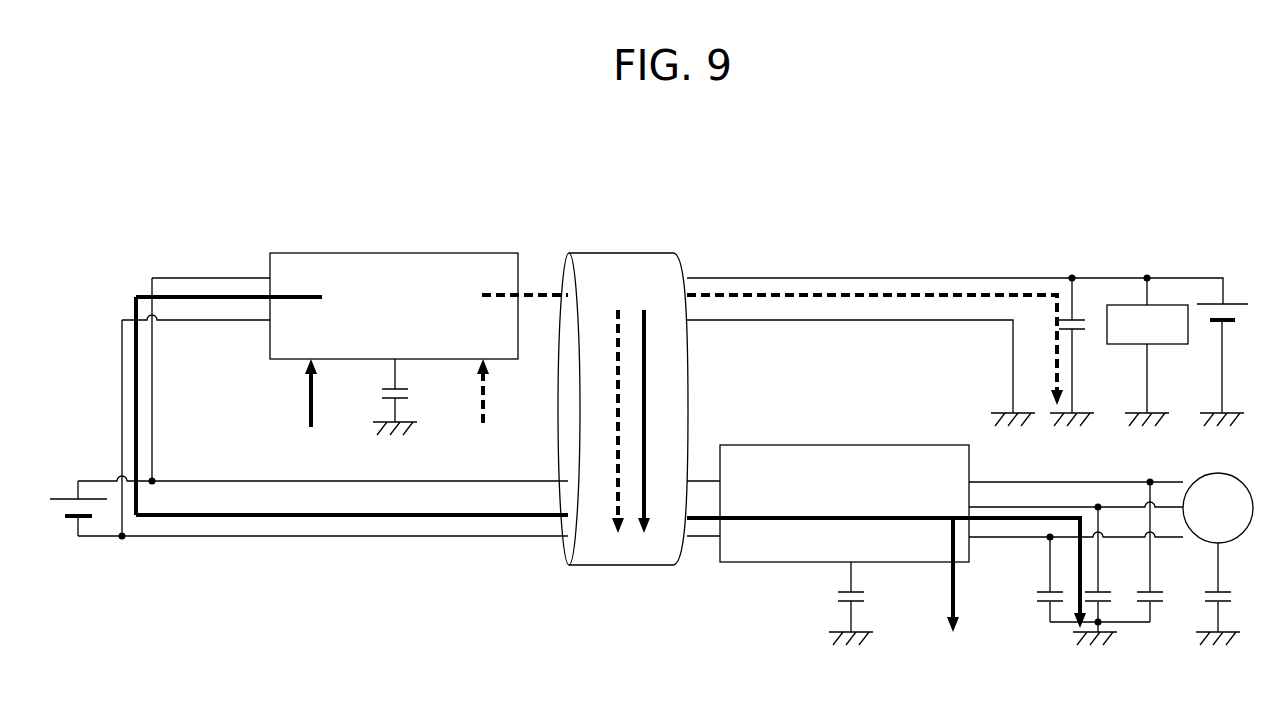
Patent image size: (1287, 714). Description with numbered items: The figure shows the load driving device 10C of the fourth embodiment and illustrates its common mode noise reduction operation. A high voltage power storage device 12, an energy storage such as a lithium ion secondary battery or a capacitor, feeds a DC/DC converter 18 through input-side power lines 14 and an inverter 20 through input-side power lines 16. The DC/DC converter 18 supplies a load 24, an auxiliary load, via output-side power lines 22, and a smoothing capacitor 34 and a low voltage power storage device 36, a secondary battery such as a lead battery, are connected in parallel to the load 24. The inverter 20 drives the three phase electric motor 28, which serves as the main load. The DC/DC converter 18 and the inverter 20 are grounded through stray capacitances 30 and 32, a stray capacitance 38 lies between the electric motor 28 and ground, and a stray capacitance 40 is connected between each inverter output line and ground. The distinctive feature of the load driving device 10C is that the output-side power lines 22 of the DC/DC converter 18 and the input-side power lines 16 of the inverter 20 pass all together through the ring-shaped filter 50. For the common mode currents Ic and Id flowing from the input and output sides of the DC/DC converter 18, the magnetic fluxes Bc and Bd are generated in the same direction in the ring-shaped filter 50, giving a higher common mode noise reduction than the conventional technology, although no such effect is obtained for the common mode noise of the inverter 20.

The load driving device 10C is at (754, 158).
The high voltage power storage device 12 is at (61, 505).
The input-side power lines 14 is at (178, 330).
The input-side power lines 16 is at (204, 541).
The DC/DC converter 18 is at (395, 251).
The inverter 20 is at (847, 444).
The output-side power lines 22 is at (738, 330).
The load 24 is at (1172, 346).
The three phase electric motor 28 is at (1224, 474).
The stray capacitance 30 is at (408, 395).
The stray capacitance 32 is at (839, 598).
The smoothing capacitor 34 is at (1079, 322).
The low voltage power storage device 36 is at (1238, 310).
The stray capacitance 38 is at (1230, 594).
The stray capacitance 40 is at (1036, 600).
The ring-shaped filter 50 is at (645, 253).
The common mode current Ic is at (228, 300).
The common mode current Id is at (531, 295).
The magnetic flux Bd is at (617, 410).
The magnetic flux Bc is at (648, 375).